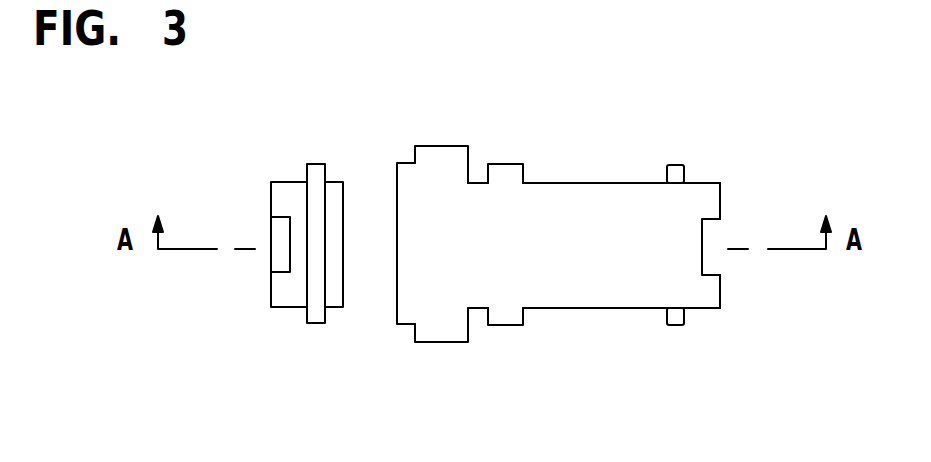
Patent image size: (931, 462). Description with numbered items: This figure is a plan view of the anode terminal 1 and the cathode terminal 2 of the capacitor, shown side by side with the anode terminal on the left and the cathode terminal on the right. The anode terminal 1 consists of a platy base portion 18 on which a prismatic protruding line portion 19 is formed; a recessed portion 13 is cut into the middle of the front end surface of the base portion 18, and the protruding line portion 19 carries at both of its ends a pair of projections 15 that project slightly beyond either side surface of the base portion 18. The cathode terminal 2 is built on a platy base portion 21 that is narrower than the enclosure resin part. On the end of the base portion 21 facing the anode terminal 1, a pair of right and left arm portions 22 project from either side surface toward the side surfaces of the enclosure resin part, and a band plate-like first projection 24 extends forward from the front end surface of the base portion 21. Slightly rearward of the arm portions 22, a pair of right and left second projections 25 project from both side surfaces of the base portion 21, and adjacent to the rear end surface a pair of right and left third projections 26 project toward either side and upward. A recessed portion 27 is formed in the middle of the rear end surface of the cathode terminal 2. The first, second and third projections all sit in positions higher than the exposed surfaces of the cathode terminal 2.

The anode terminal 1 is at (188, 368).
The cathode terminal 2 is at (698, 183).
The recessed portion 13 is at (290, 232).
The projections 15 is at (316, 177).
The base portion 18 is at (281, 300).
The protruding line portion 19 is at (315, 283).
The base portion 21 is at (600, 182).
The arm portions 22 is at (443, 156).
The first projection 24 is at (405, 253).
The second projections 25 is at (505, 170).
The third projections 26 is at (677, 170).
The recessed portion 27 is at (703, 261).